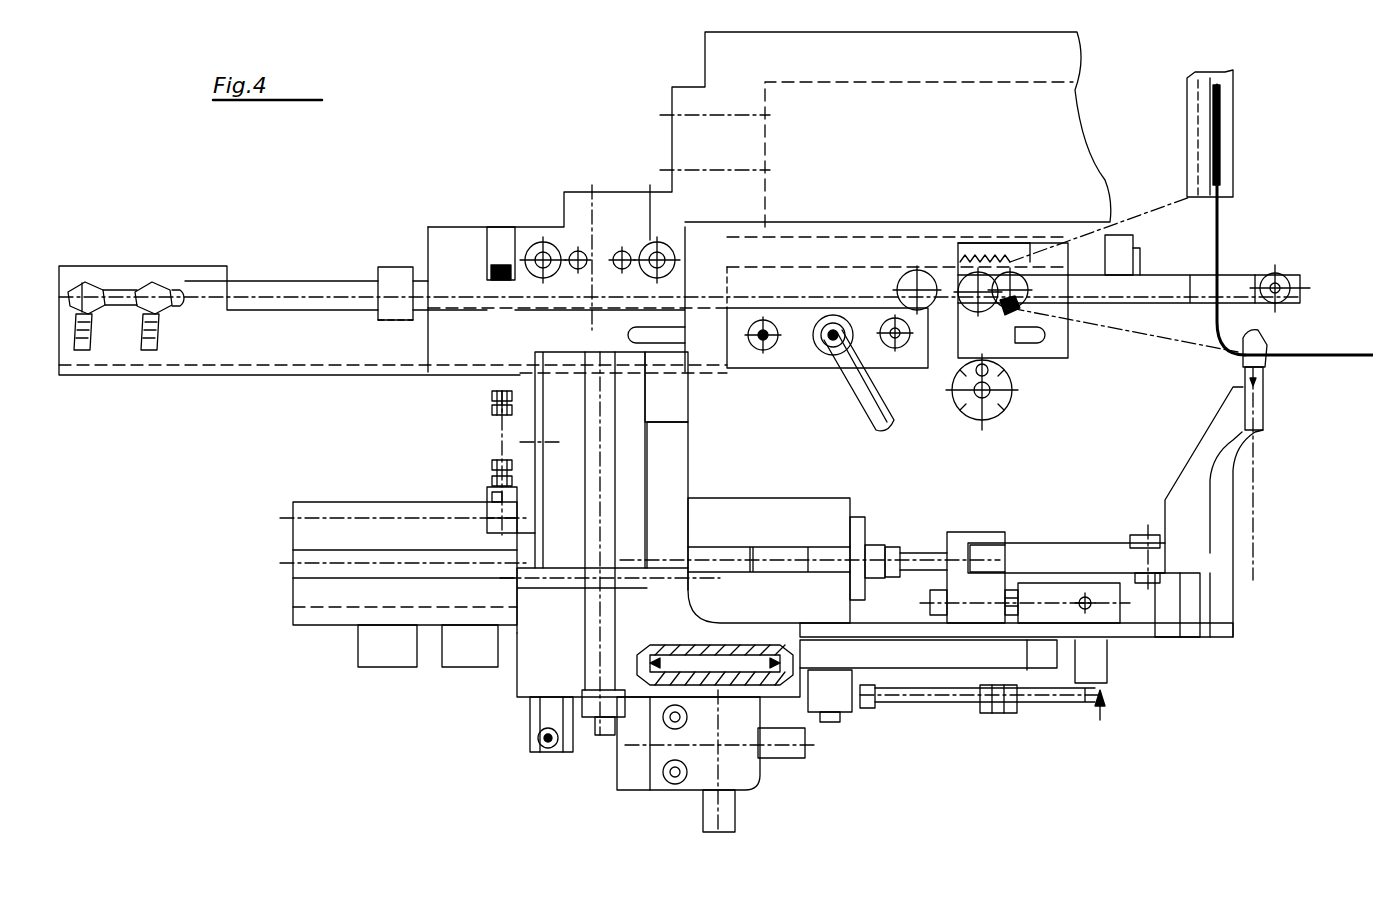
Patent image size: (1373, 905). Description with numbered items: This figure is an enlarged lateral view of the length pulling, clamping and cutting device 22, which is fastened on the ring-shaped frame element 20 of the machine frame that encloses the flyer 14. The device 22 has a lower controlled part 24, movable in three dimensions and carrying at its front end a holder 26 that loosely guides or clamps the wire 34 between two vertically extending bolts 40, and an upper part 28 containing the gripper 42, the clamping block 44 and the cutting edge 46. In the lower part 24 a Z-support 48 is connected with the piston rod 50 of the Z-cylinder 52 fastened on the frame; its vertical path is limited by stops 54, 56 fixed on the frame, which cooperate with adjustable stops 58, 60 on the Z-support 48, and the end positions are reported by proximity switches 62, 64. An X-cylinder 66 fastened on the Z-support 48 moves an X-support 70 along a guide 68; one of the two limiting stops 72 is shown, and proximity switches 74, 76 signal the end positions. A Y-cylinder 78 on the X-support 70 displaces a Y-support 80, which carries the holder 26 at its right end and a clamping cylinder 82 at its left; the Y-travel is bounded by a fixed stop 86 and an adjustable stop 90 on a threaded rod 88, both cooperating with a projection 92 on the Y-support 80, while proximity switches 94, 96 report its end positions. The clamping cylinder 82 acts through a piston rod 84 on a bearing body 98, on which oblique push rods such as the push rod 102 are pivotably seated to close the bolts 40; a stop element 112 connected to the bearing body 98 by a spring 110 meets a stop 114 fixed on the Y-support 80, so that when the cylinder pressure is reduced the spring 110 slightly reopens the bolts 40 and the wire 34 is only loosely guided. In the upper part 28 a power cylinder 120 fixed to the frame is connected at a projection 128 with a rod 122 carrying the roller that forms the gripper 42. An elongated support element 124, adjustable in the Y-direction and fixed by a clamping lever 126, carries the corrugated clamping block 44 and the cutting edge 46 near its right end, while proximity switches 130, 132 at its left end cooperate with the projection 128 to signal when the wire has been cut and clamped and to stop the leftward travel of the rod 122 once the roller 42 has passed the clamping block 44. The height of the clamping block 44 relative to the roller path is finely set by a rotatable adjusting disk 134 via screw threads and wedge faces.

The flyer 14 is at (1228, 133).
The ring-shaped frame element 20 is at (722, 53).
The length pulling, clamping and cutting device 22 is at (448, 222).
The lower controlled part 24 is at (1100, 722).
The holder 26 is at (1240, 432).
The upper part 28 is at (781, 372).
The wire 34 is at (1318, 362).
The bolts 40 is at (1258, 342).
The gripper 42 is at (1285, 277).
The clamping block 44 is at (968, 250).
The cutting edge 46 is at (1010, 308).
The Z-support 48 is at (530, 685).
The piston rod 50 is at (593, 632).
The Z-cylinder 52 is at (580, 430).
The stop 54 is at (513, 268).
The stop 56 is at (495, 503).
The adjustable stop 58 is at (490, 395).
The adjustable stop 60 is at (495, 484).
The proximity switch 62 is at (672, 398).
The proximity switch 64 is at (665, 508).
The X-cylinder 66 is at (745, 762).
The guide 68 is at (668, 682).
The X-support 70 is at (790, 672).
The stop 72 is at (540, 745).
The proximity switch 74 is at (710, 800).
The proximity switch 76 is at (788, 752).
The Y-cylinder 78 is at (375, 510).
The Y-support 80 is at (1137, 630).
The clamping cylinder 82 is at (755, 508).
The piston rod 84 is at (913, 558).
The fixed stop 86 is at (838, 690).
The threaded rod 88 is at (920, 705).
The adjustable stop 90 is at (985, 702).
The projection 92 is at (875, 705).
The proximity switch 94 is at (368, 647).
The proximity switch 96 is at (450, 655).
The bearing body 98 is at (957, 552).
The push rod 102 is at (1093, 550).
The spring 110 is at (1012, 596).
The stop element 112 is at (1050, 590).
The stop 114 is at (1168, 612).
The power cylinder 120 is at (1125, 262).
The rod 122 is at (1242, 280).
The support element 124 is at (255, 325).
The clamping lever 126 is at (880, 412).
The projection 128 is at (390, 278).
The proximity switch 130 is at (155, 282).
The proximity switch 132 is at (82, 282).
The adjusting disk 134 is at (975, 410).